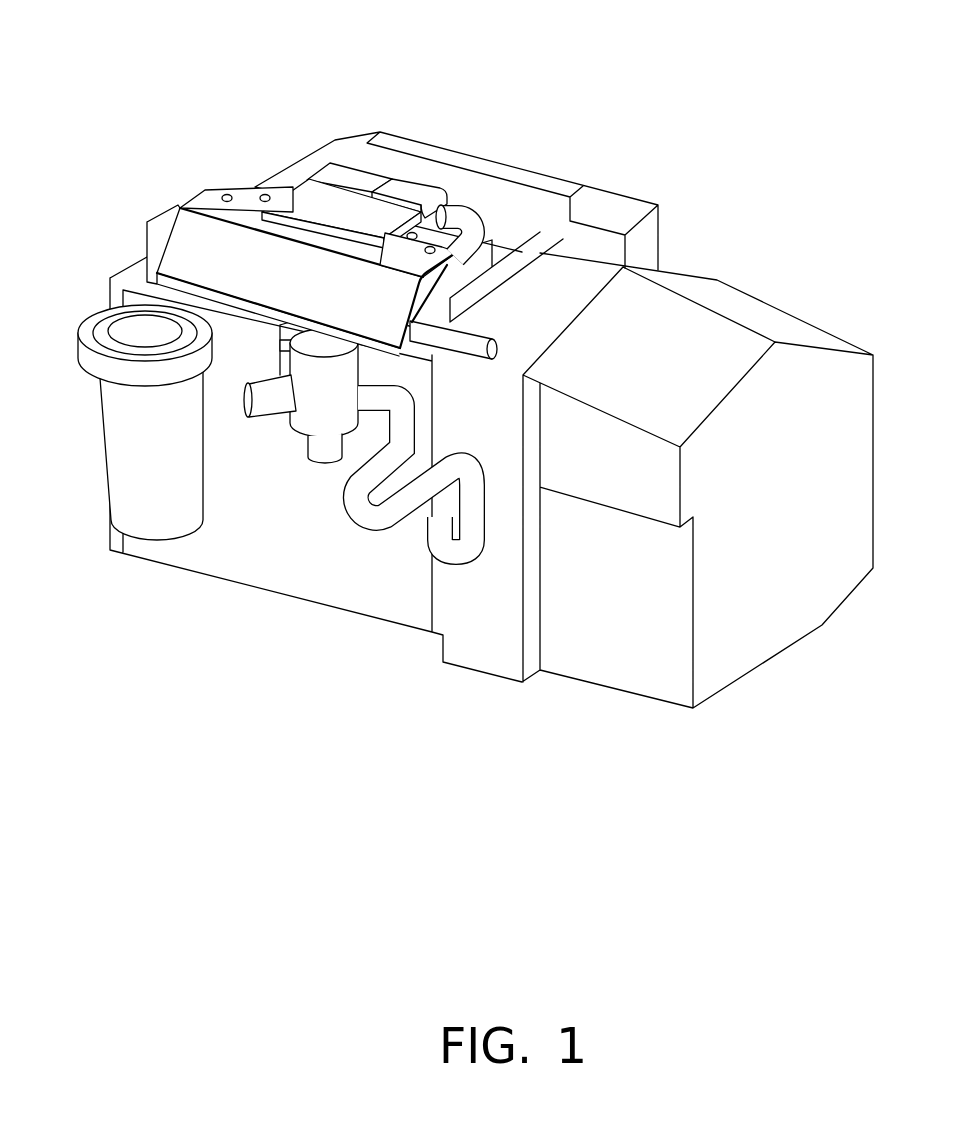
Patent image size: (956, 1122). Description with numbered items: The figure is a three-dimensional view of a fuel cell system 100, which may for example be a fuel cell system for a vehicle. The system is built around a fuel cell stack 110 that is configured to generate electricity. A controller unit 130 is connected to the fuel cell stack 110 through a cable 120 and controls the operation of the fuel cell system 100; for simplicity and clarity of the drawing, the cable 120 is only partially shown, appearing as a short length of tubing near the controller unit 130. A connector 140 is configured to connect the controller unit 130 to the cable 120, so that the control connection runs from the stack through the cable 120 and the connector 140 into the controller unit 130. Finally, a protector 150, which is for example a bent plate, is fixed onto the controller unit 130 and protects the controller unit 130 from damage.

The fuel cell system 100 is at (474, 419).
The fuel cell stack 110 is at (312, 552).
The cable 120 is at (463, 213).
The controller unit 130 is at (343, 211).
The connector 140 is at (404, 193).
The protector 150 is at (185, 249).